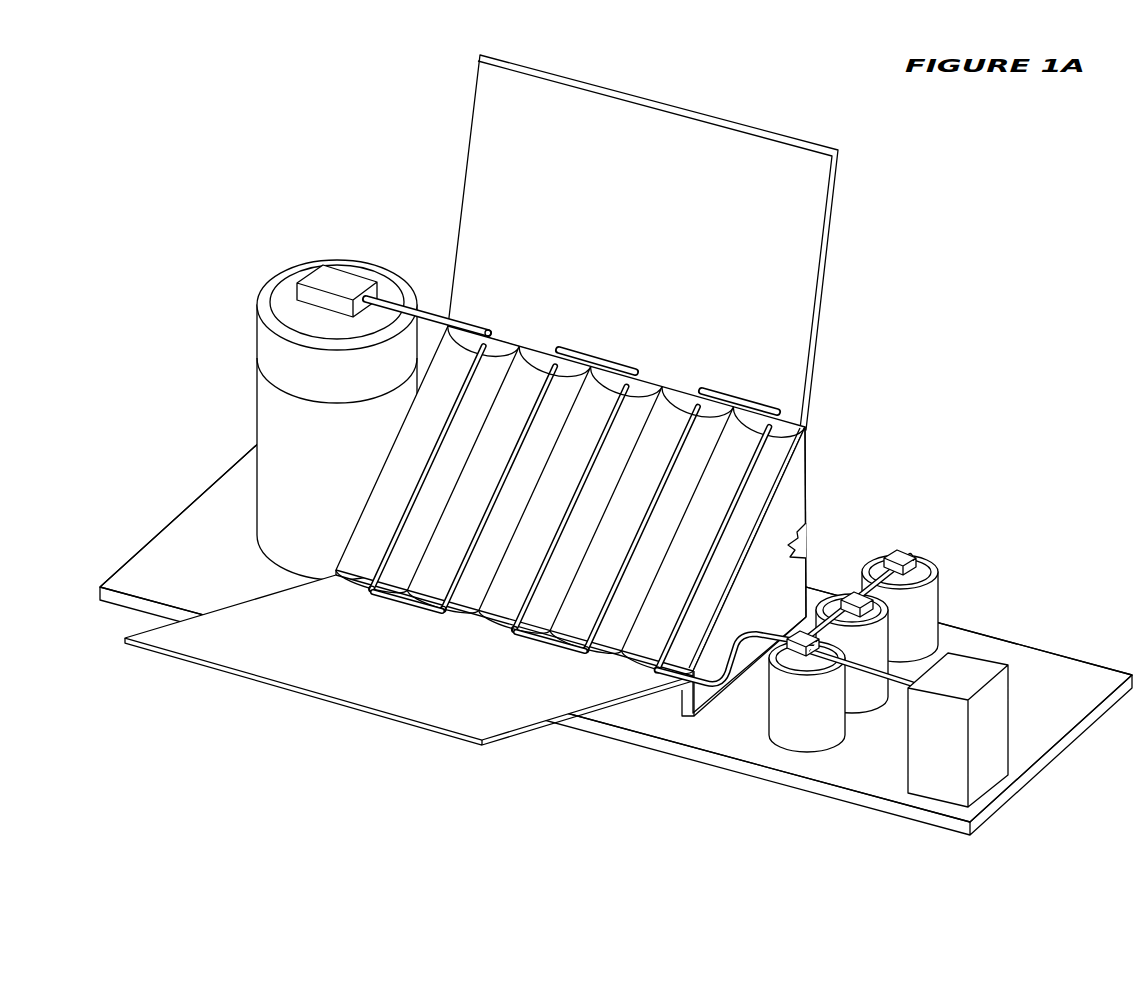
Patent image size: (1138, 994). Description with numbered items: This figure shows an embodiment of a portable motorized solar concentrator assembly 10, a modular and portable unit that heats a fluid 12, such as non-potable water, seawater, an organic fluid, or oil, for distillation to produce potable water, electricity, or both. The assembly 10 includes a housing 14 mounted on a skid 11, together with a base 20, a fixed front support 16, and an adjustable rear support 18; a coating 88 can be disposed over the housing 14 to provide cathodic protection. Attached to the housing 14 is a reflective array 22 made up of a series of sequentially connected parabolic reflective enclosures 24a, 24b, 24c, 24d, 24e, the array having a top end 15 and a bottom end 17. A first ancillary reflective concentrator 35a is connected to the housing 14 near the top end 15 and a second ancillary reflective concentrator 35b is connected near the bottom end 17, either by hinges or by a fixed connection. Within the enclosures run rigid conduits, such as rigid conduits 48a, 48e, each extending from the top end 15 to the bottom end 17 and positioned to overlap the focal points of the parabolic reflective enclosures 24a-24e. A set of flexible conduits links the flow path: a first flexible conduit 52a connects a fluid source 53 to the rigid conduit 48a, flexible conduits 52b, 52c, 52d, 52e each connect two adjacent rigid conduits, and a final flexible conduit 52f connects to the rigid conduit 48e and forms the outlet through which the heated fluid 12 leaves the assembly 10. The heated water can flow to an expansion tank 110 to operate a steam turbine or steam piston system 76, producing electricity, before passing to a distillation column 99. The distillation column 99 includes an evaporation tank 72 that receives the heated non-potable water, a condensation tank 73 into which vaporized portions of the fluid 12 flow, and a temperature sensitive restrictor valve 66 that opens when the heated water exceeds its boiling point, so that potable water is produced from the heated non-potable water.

The portable motorized solar concentrator assembly 10 is at (211, 116).
The skid 11 is at (1088, 674).
The fluid 12 is at (275, 372).
The housing 14 is at (836, 504).
The top end 15 is at (509, 331).
The fixed front support 16 is at (680, 703).
The bottom end 17 is at (350, 596).
The adjustable rear support 18 is at (808, 500).
The base 20 is at (712, 703).
The reflective array 22 is at (335, 528).
The parabolic reflective enclosure 24a is at (384, 460).
The parabolic reflective enclosure 24b is at (548, 350).
The parabolic reflective enclosure 24c is at (652, 379).
The parabolic reflective enclosure 24d is at (690, 392).
The parabolic reflective enclosure 24e is at (790, 410).
The first ancillary reflective concentrator 35a is at (497, 105).
The second ancillary reflective concentrator 35b is at (313, 692).
The rigid conduit 48a is at (390, 500).
The rigid conduit 48e is at (758, 463).
The first flexible conduit 52a is at (434, 310).
The flexible conduit 52b is at (400, 607).
The flexible conduit 52c is at (602, 354).
The flexible conduit 52d is at (543, 647).
The flexible conduit 52e is at (743, 408).
The final flexible conduit 52f is at (765, 632).
The fluid source 53 is at (258, 333).
The temperature sensitive restrictor valve 66 is at (853, 598).
The evaporation tank 72 is at (878, 690).
The condensation tank 73 is at (935, 608).
The steam turbine or steam piston system 76 is at (941, 780).
The coating 88 is at (806, 545).
The distillation column 99 is at (972, 610).
The expansion tank 110 is at (788, 740).